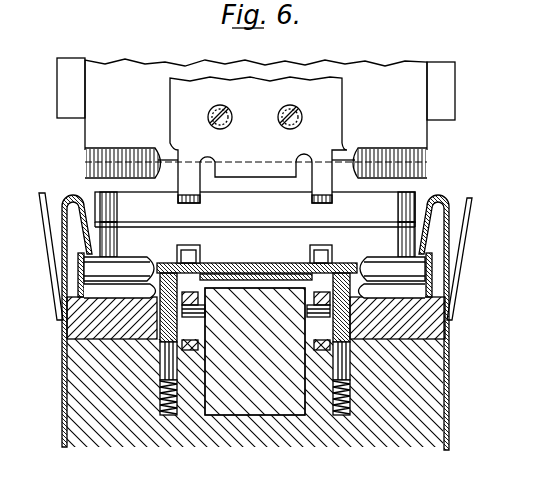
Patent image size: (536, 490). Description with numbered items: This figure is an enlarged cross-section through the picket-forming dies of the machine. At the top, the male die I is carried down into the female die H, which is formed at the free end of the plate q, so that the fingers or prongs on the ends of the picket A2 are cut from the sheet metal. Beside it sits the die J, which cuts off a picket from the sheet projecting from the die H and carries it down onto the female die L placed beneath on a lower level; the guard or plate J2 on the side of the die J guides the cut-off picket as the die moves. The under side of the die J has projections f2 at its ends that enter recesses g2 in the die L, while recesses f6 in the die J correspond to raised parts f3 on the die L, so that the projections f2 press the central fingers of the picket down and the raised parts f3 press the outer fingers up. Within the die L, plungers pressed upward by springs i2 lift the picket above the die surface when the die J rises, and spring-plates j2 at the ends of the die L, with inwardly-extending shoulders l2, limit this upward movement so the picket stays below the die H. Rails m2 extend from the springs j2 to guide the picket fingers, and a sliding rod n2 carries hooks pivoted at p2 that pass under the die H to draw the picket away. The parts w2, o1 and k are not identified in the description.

The male die I is at (256, 89).
The die J is at (256, 109).
The guard or plate J2 is at (258, 140).
The recesses f6 is at (85, 148).
The projections f2 is at (85, 172).
The cross bar w2 is at (255, 207).
The female die H is at (255, 237).
The plate q is at (372, 243).
The spring-plates j2 is at (255, 322).
The inwardly-extending shoulders l2 is at (94, 258).
The picket A2 is at (257, 260).
The clip o1 is at (254, 268).
The post k is at (255, 307).
The rails m2 is at (256, 304).
The sliding rod n2 is at (255, 351).
The pivot p2 is at (256, 339).
The female die L is at (256, 318).
The raised parts f3 is at (78, 286).
The recesses g2 is at (62, 318).
The springs i2 is at (260, 378).